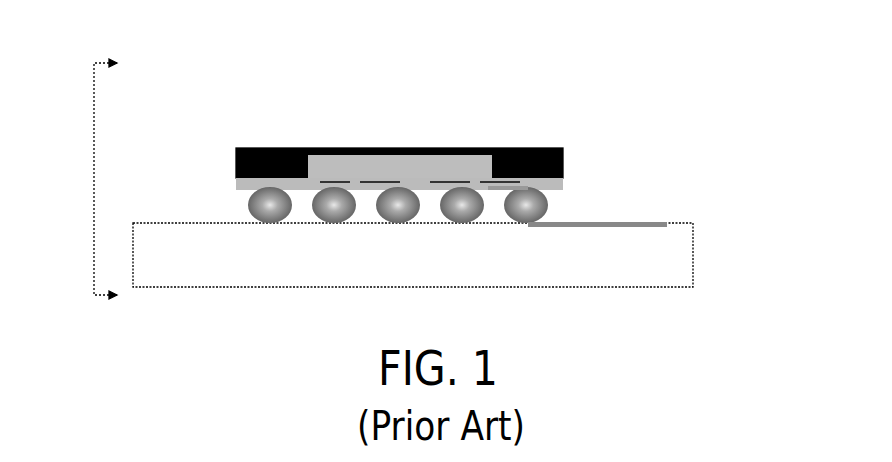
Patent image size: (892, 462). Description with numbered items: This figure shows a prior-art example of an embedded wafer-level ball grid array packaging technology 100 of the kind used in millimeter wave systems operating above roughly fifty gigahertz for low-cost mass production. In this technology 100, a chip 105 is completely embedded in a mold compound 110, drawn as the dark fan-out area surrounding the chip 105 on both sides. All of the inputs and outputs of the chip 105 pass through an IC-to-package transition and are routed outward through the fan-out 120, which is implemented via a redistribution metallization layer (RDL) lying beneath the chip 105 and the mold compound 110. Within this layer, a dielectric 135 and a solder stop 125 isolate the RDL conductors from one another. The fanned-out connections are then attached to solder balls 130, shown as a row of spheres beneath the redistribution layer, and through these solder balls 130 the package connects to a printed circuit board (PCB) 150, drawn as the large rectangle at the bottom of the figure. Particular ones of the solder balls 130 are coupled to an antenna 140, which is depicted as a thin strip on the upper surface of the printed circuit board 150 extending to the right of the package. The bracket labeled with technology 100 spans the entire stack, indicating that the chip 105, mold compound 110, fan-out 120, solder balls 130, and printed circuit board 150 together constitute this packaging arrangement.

The embedded wafer-level ball grid array packaging technology 100 is at (94, 182).
The chip 105 is at (391, 160).
The mold compound 110 is at (280, 148).
The fan-out 120 is at (482, 182).
The solder stop 125 is at (497, 185).
The solder balls 130 is at (397, 207).
The dielectric 135 is at (312, 185).
The antenna 140 is at (655, 222).
The printed circuit board 150 is at (175, 220).